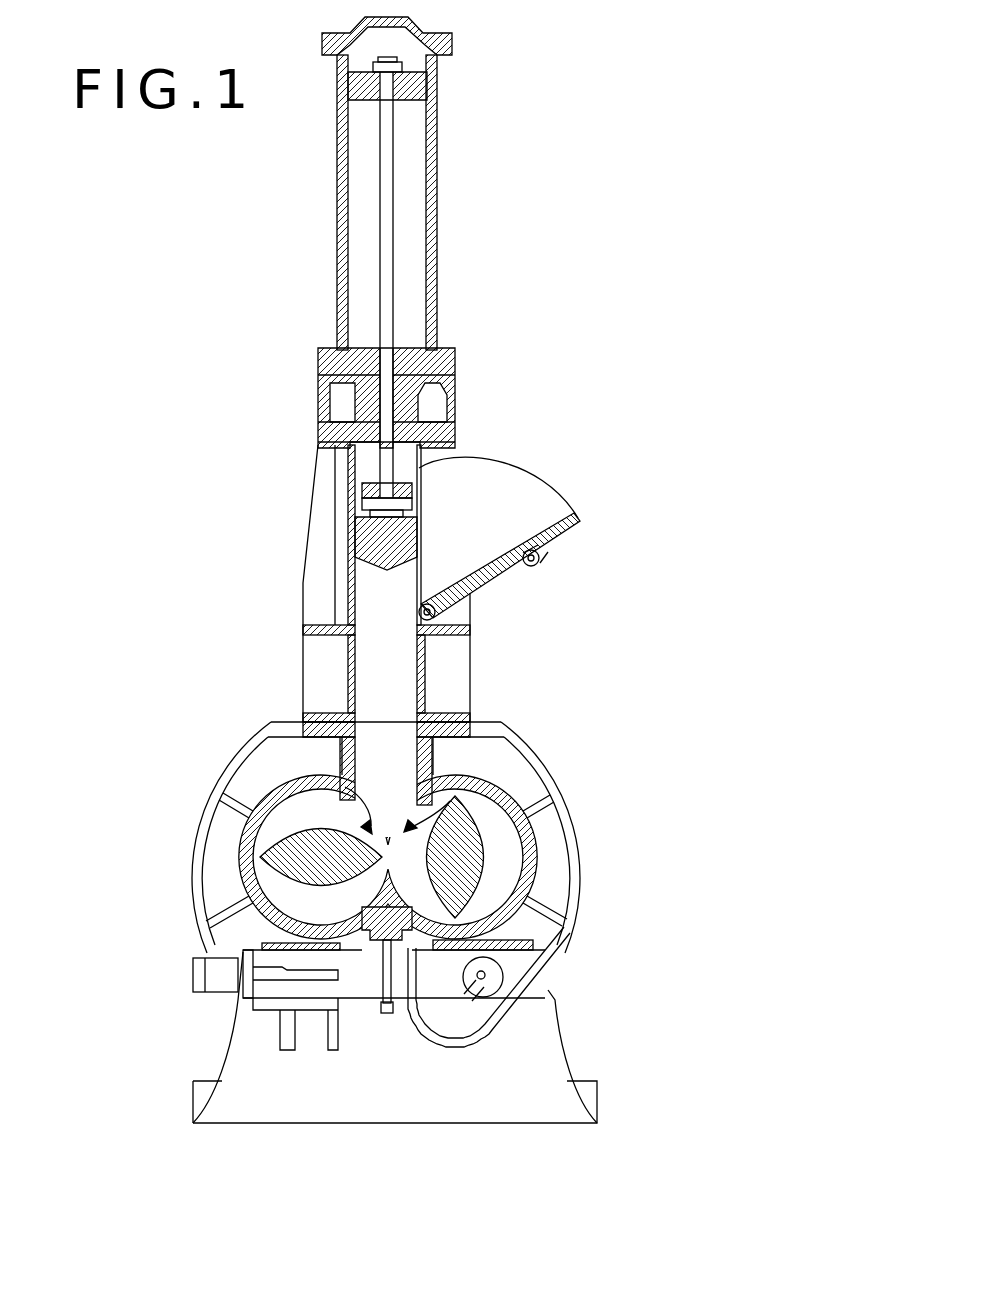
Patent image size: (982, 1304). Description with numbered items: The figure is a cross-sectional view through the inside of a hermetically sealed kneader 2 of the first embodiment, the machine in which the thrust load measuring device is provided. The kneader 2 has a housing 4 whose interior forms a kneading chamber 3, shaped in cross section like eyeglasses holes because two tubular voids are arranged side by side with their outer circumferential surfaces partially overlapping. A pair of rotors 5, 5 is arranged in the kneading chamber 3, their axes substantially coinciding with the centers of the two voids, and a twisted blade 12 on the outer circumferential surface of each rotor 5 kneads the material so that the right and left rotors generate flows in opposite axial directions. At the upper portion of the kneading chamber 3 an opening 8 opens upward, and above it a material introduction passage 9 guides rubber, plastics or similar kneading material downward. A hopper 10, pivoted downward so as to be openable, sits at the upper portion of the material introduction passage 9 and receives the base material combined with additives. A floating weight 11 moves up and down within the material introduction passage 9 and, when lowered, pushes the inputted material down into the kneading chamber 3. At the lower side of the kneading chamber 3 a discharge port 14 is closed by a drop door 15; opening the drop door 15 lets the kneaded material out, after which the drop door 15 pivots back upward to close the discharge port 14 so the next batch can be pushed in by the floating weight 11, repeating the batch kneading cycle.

The hermetically sealed kneader 2 is at (586, 261).
The kneading chamber 3 is at (508, 850).
The housing 4 is at (533, 765).
The rotor 5 is at (255, 912).
The opening 8 is at (335, 757).
The material introduction passage 9 is at (419, 668).
The hopper 10 is at (560, 532).
The floating weight 11 is at (403, 492).
The blade 12 is at (467, 810).
The discharge port 14 is at (380, 950).
The drop door 15 is at (413, 950).